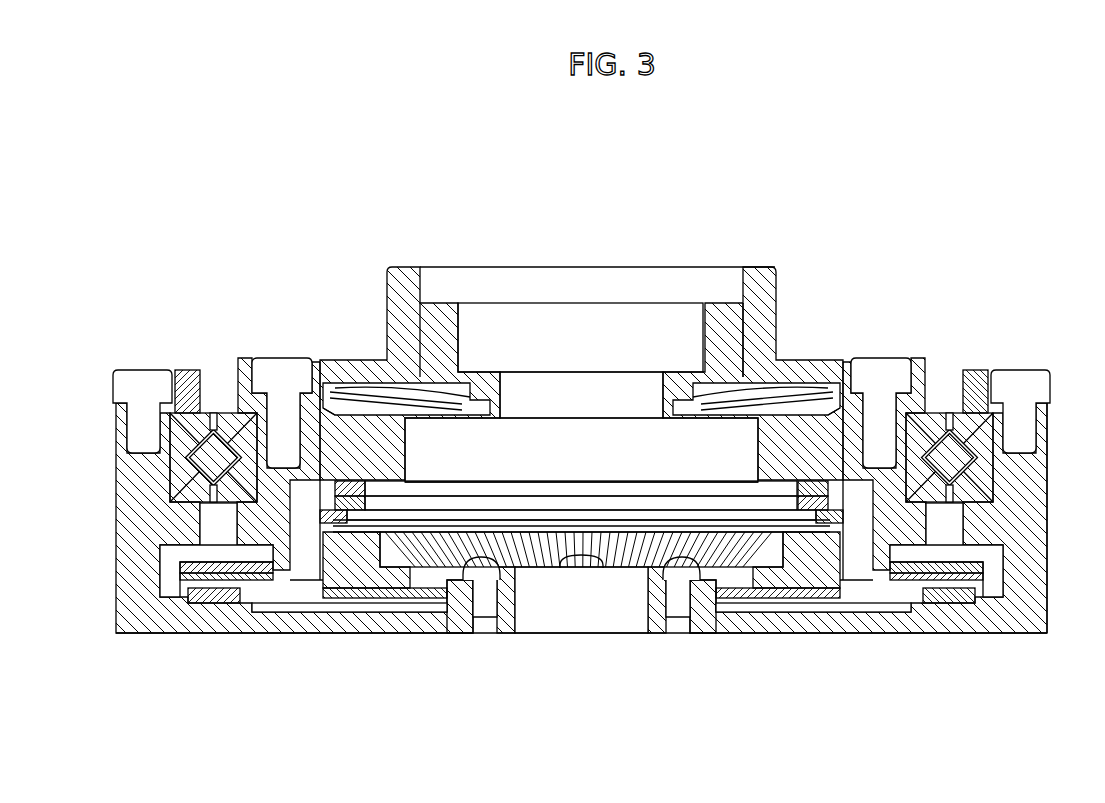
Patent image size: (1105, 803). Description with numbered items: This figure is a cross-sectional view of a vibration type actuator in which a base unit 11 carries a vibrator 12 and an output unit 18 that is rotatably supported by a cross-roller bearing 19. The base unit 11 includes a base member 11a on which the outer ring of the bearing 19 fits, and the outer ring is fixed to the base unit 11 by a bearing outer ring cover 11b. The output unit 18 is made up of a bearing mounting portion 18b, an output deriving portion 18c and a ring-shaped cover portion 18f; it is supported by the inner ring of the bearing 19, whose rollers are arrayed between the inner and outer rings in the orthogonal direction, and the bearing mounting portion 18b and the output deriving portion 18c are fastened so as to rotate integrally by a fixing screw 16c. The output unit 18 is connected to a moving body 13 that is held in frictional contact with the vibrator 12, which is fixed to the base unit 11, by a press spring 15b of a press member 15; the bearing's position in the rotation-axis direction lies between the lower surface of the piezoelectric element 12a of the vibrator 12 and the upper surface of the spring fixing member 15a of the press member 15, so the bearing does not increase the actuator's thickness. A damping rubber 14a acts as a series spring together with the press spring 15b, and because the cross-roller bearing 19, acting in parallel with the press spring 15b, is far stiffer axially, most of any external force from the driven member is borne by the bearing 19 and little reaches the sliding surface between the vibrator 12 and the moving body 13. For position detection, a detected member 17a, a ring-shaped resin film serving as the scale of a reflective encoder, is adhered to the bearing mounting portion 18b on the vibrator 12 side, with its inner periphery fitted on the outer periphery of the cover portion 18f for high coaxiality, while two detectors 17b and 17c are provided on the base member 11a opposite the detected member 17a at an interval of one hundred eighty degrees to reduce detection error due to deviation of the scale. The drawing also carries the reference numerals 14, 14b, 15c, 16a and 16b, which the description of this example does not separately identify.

The base unit 11 is at (995, 263).
The base member 11a is at (1035, 470).
The bearing outer ring cover 11b is at (972, 382).
The vibrator 12 is at (373, 573).
The piezoelectric element 12a is at (335, 620).
The moving body 13 is at (312, 555).
The leaf spring unit 14 is at (352, 284).
The damping rubber 14a is at (330, 395).
The second leaf spring 14b is at (348, 402).
The press member 15 is at (703, 212).
The spring fixing member 15a is at (442, 338).
The press spring 15b is at (770, 365).
The lens barrel 15c is at (805, 362).
The flexible printed circuit 16a is at (485, 590).
The fixing screw 16b is at (134, 392).
The fixing screw 16c is at (266, 372).
The detected member 17a is at (905, 573).
The detector 17b is at (947, 598).
The detector 17c is at (212, 600).
The output unit 18 is at (822, 237).
The bearing mounting portion 18b is at (887, 485).
The output deriving portion 18c is at (760, 283).
The cover portion 18f is at (877, 567).
The cross-roller bearing 19 is at (985, 505).